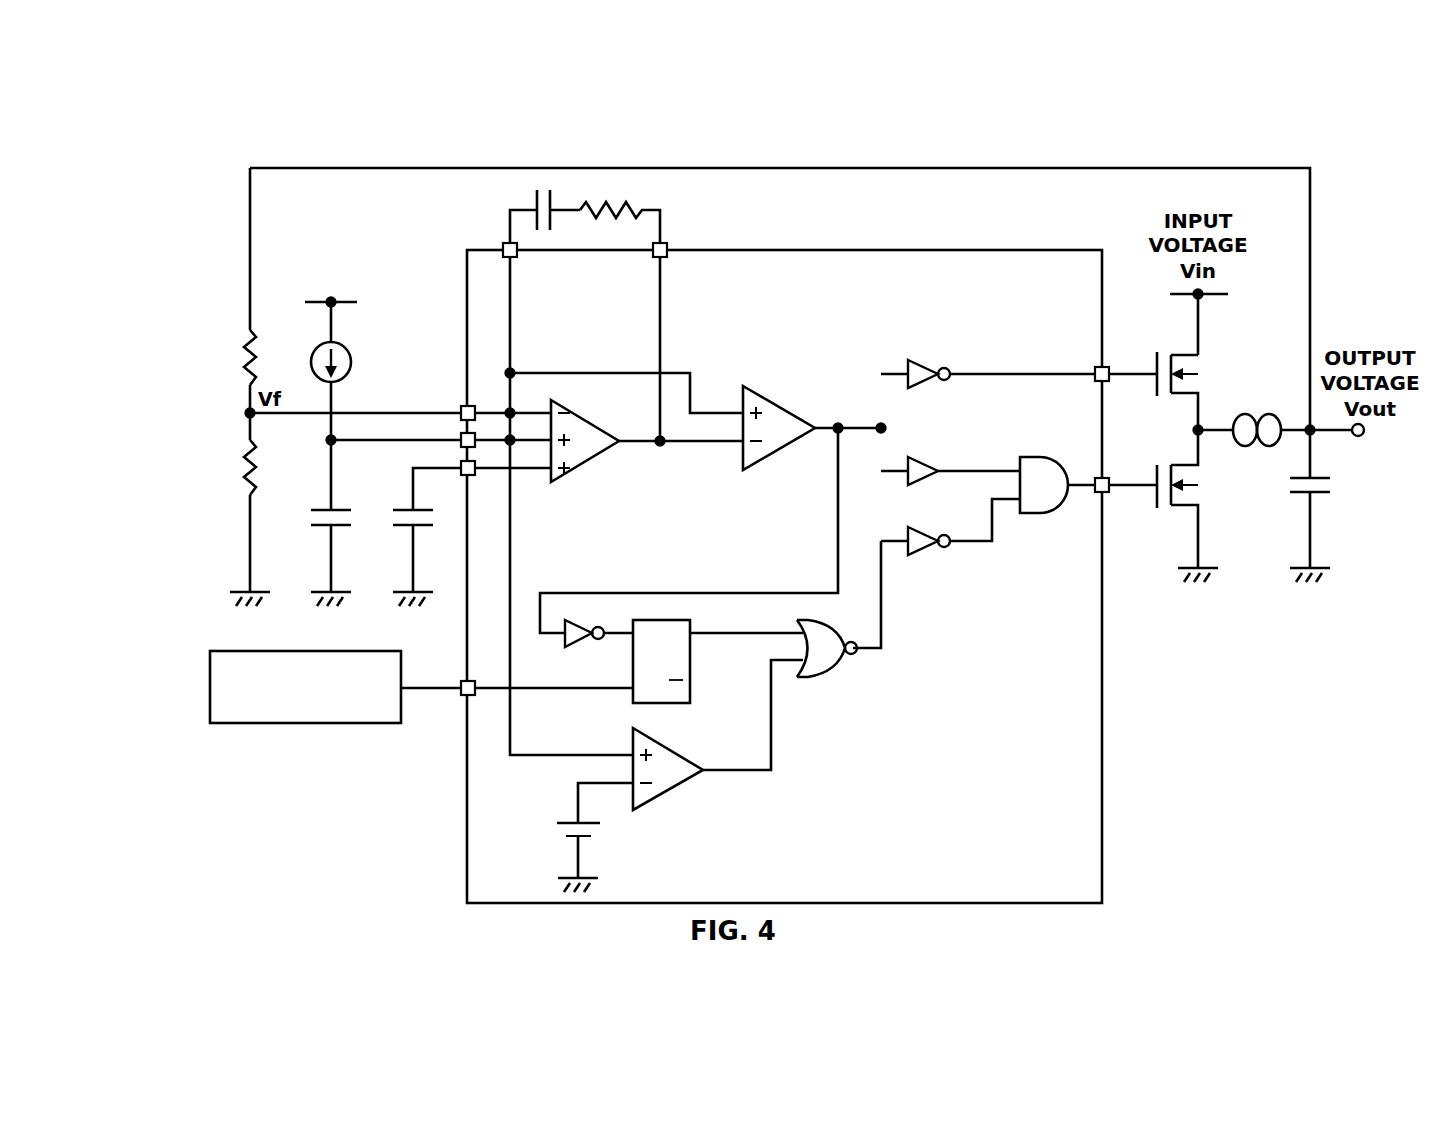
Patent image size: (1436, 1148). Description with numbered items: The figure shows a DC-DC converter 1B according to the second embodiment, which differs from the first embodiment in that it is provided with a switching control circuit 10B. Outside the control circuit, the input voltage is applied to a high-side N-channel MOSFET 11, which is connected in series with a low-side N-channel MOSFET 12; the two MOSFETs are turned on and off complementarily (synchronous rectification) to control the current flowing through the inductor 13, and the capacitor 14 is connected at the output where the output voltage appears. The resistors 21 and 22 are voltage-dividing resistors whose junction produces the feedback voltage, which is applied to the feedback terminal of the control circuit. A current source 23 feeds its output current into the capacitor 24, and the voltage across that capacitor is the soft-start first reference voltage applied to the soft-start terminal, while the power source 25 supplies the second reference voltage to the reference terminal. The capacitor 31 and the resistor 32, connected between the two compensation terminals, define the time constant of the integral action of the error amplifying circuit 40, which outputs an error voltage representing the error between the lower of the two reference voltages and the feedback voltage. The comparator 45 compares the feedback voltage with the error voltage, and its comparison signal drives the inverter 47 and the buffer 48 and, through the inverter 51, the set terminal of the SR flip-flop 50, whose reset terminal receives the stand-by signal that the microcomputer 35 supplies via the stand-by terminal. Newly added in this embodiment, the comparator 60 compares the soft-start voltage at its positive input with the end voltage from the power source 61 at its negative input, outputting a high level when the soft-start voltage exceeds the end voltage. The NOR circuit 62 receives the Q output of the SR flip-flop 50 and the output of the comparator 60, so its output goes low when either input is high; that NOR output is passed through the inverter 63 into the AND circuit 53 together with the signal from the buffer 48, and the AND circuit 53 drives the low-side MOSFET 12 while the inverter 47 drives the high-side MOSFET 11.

The DC-DC converter 1B is at (656, 140).
The switching control circuit 10B is at (466, 292).
The N-channel MOSFET 11 is at (1182, 354).
The N-channel MOSFET 12 is at (1184, 508).
The inductor 13 is at (1253, 416).
The capacitor 14 is at (1322, 496).
The resistor 21 is at (256, 328).
The resistor 22 is at (256, 488).
The current source 23 is at (349, 350).
The capacitor 24 is at (338, 528).
The power source 25 is at (416, 528).
The capacitor 31 is at (533, 197).
The resistor 32 is at (632, 212).
The microcomputer 35 is at (210, 676).
The error amplifying circuit 40 is at (590, 470).
The comparator 45 is at (770, 460).
The inverter 47 is at (920, 388).
The buffer 48 is at (926, 466).
The SR flip-flop 50 is at (690, 662).
The inverter 51 is at (570, 645).
The AND circuit 53 is at (1032, 514).
The comparator 60 is at (668, 800).
The power source 61 is at (565, 835).
The NOR circuit 62 is at (830, 676).
The inverter 63 is at (920, 555).